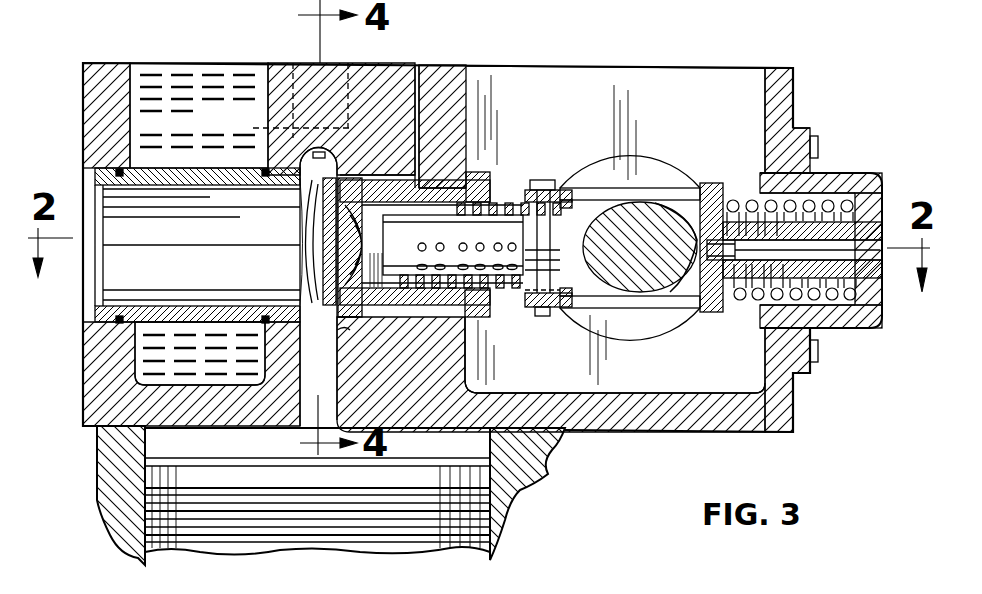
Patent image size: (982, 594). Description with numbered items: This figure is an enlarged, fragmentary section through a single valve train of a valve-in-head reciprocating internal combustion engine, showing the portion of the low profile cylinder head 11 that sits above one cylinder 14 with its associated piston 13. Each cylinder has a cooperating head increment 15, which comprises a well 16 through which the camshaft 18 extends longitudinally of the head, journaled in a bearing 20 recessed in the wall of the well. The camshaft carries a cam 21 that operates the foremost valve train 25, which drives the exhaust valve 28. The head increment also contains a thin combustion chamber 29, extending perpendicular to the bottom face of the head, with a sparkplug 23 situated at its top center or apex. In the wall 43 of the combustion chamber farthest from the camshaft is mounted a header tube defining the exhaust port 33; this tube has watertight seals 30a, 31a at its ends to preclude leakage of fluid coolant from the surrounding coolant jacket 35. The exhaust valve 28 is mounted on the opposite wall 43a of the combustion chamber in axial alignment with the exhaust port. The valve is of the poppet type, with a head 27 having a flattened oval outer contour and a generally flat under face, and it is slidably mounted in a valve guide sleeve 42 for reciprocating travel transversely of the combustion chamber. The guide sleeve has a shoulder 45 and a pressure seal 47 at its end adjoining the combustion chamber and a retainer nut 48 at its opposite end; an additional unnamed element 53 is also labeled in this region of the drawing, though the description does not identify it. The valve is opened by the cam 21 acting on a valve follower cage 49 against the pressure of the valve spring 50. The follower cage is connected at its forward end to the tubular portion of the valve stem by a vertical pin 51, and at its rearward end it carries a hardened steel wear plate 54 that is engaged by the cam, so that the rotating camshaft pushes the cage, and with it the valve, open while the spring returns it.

The cylinder head 11 is at (815, 401).
The piston 13 is at (478, 485).
The cylinder 14 is at (172, 442).
The head increment 15 is at (800, 85).
The well 16 is at (680, 66).
The camshaft 18 is at (622, 285).
The bearing 20 is at (603, 170).
The cam 21 is at (650, 300).
The sparkplug 23 is at (293, 128).
The valve train 25 is at (845, 338).
The valve head 27 is at (318, 227).
The exhaust valve 28 is at (308, 277).
The combustion chamber 29 is at (318, 386).
The watertight seal 30a is at (118, 322).
The watertight seal 31a is at (265, 316).
The exhaust port 33 is at (290, 228).
The coolant jacket 35 is at (147, 357).
The valve guide sleeve 42 is at (447, 325).
The combustion chamber wall 43 is at (305, 428).
The combustion chamber wall 43a is at (333, 341).
The shoulder 45 is at (352, 167).
The pressure seal 47 is at (358, 302).
The retainer nut 48 is at (482, 162).
The valve follower cage 49 is at (672, 185).
The valve spring 50 is at (832, 185).
The vertical pin 51 is at (540, 180).
The spring 53 is at (385, 190).
The wear plate 54 is at (705, 310).